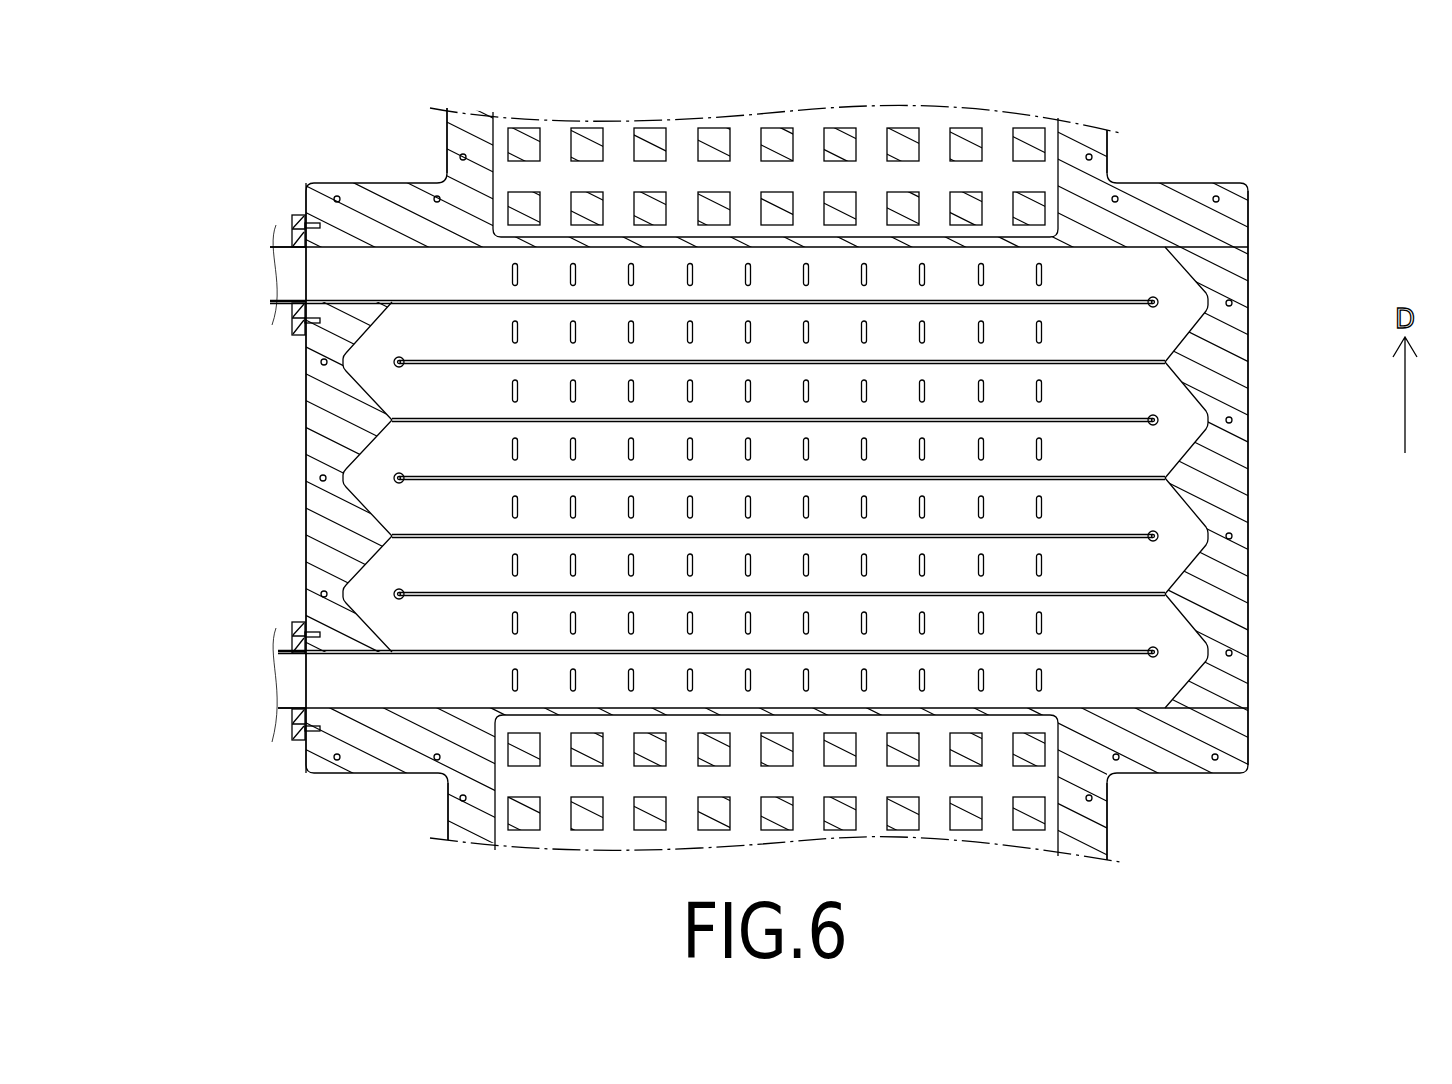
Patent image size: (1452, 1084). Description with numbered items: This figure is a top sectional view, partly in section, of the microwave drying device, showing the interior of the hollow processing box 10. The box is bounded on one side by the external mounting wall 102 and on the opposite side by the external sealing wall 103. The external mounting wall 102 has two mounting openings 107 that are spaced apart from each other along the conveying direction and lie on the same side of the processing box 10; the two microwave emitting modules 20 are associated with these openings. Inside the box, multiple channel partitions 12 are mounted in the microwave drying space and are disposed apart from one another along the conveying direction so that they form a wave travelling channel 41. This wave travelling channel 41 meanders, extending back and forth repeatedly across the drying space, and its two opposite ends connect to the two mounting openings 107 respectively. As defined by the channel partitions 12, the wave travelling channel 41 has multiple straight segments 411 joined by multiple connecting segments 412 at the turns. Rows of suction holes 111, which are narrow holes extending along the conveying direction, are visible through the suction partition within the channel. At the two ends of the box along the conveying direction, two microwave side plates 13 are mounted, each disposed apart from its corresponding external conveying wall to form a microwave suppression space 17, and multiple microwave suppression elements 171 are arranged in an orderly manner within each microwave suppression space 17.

The processing box 10 is at (1183, 160).
The external mounting wall 102 is at (302, 490).
The external sealing wall 103 is at (1248, 478).
The mounting openings 107 is at (300, 272).
The suction holes 111 is at (1040, 275).
The channel partitions 12 is at (1080, 539).
The microwave side plates 13 is at (930, 240).
The microwave suppression space 17 is at (682, 170).
The microwave suppression elements 171 is at (838, 137).
The microwave emitting modules 20 is at (294, 238).
The wave travelling channel 41 is at (1124, 518).
The straight segments 411 is at (1007, 505).
The connecting segments 412 is at (1177, 535).